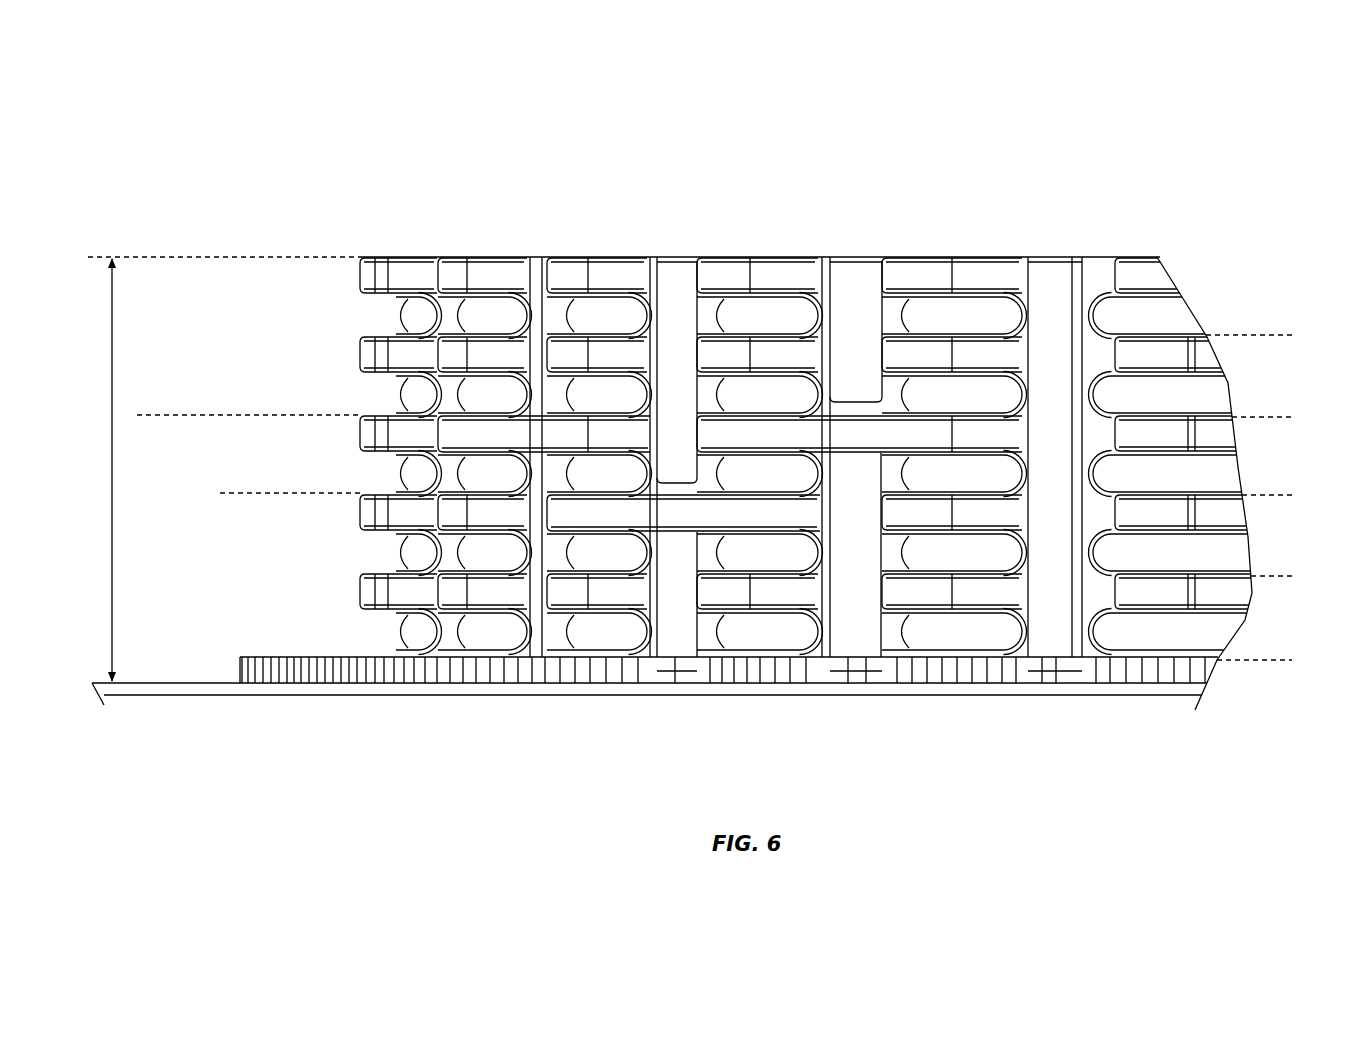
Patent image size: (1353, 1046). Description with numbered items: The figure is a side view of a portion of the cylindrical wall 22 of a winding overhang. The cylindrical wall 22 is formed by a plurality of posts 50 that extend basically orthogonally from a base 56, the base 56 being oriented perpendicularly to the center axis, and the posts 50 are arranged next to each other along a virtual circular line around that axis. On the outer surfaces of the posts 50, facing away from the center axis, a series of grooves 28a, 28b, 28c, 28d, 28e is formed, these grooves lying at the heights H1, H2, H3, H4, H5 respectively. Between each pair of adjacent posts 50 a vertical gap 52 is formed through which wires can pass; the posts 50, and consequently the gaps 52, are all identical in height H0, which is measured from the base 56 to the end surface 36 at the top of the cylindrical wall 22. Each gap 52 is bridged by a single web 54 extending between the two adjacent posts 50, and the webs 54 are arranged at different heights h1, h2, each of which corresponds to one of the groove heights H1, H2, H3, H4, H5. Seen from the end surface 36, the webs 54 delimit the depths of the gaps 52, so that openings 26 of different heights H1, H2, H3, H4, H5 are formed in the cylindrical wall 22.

The cylindrical wall 22 is at (1160, 152).
The end surface 36 is at (494, 222).
The posts 50 is at (597, 245).
The openings 26 is at (663, 245).
The vertical gaps 52 is at (680, 245).
The groove 28a is at (375, 311).
The groove 28b is at (375, 390).
The groove 28c is at (375, 469).
The groove 28d is at (375, 547).
The groove 28e is at (375, 630).
The web 54 is at (484, 438).
The base 56 is at (207, 687).
The height of the posts H0 is at (218, 469).
The height of a web h1 is at (246, 399).
The height of a web h2 is at (276, 501).
The height of a groove H1 is at (1268, 342).
The height of a groove H2 is at (1281, 424).
The height of a groove H3 is at (1286, 502).
The height of a groove H4 is at (1290, 583).
The height of a groove H5 is at (1273, 667).